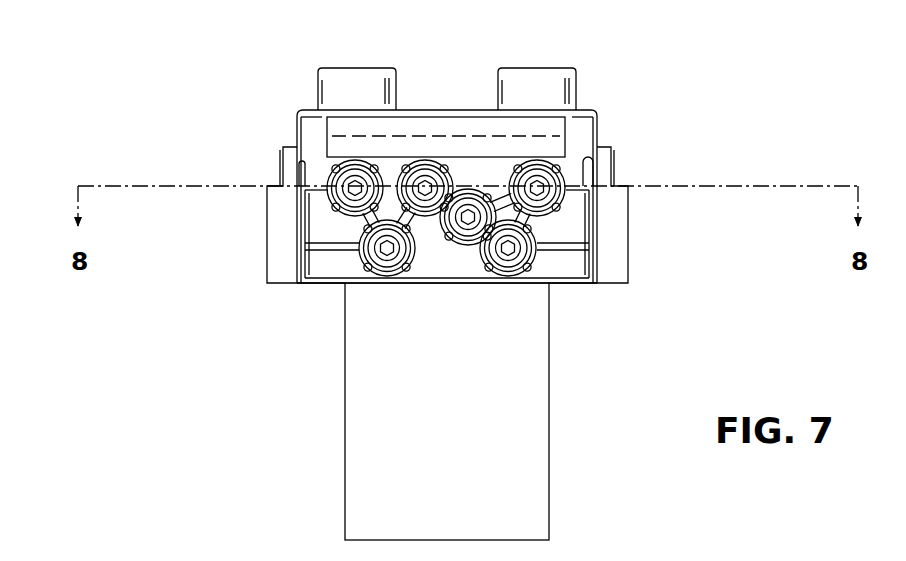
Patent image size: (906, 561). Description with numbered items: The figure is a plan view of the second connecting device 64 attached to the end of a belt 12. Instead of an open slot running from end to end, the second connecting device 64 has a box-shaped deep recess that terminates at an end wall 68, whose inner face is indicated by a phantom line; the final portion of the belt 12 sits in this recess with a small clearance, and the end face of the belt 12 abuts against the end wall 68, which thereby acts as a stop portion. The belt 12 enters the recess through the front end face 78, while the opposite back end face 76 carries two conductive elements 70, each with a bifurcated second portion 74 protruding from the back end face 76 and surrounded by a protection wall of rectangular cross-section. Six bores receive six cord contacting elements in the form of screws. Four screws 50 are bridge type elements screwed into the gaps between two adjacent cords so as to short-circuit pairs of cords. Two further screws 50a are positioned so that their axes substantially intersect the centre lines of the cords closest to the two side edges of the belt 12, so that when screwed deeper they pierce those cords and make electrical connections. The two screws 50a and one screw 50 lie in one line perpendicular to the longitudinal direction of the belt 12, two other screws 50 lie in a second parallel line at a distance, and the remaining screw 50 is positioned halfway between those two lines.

The belt 12 is at (368, 423).
The screws 50 is at (462, 243).
The screws 50a is at (352, 190).
The second connecting device 64 is at (278, 99).
The end wall 68 is at (455, 132).
The conductive elements 70 is at (492, 57).
The bifurcated second portion 74 is at (560, 86).
The back end face 76 is at (584, 100).
The front end face 78 is at (568, 285).